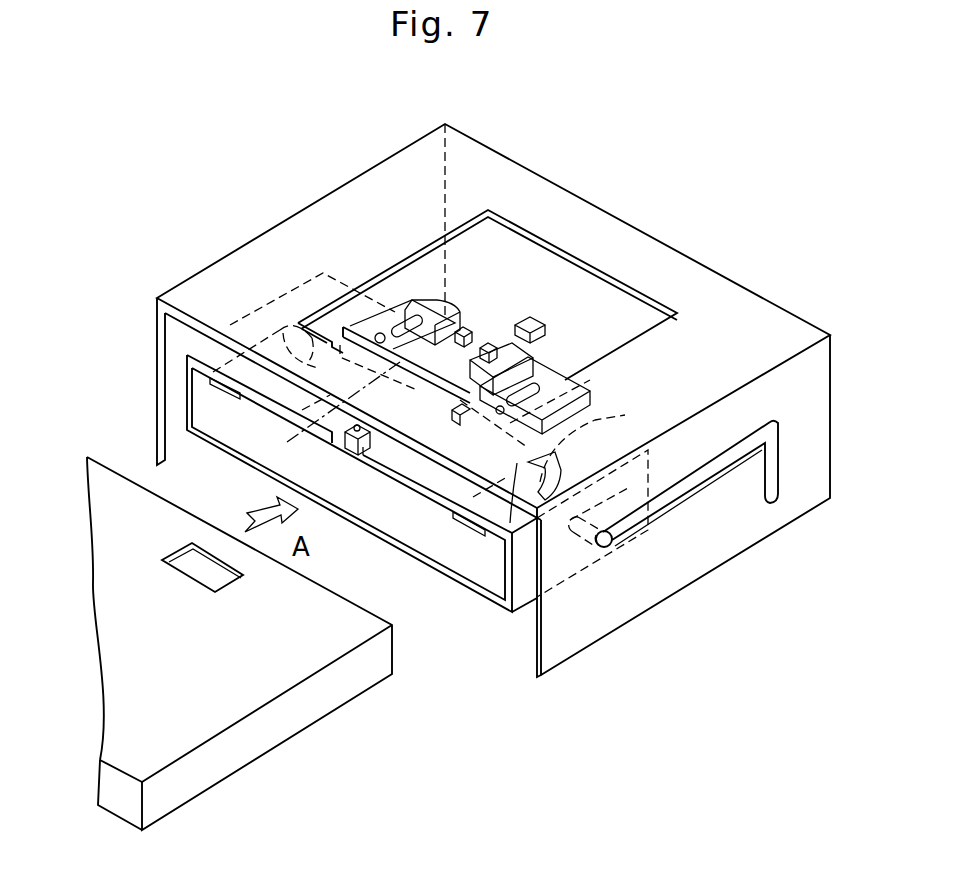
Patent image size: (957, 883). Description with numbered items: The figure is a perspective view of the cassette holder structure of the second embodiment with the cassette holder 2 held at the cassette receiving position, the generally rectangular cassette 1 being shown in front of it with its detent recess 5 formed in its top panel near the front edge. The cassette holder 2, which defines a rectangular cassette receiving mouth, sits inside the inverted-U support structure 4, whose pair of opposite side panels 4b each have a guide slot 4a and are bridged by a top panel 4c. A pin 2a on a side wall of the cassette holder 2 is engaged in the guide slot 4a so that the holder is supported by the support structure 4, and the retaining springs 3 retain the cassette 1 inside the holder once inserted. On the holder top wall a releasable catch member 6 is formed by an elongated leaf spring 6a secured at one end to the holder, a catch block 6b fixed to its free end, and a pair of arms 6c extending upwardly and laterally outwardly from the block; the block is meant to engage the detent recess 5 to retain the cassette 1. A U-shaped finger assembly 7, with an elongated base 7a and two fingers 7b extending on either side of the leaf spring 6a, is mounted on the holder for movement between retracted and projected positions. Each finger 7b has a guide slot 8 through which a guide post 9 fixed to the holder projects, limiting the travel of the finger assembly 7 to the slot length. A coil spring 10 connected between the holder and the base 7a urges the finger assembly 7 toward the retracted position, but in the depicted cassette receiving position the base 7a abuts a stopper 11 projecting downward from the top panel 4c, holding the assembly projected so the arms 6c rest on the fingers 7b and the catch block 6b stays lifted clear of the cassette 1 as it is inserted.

The cassette 1 is at (270, 735).
The cassette holder 2 is at (487, 575).
The pin 2a is at (607, 553).
The retaining spring 3 is at (296, 323).
The support structure 4 is at (702, 296).
The guide slot 4a is at (722, 462).
The side panel 4b is at (817, 435).
The top panel 4c is at (750, 312).
The detent recess 5 is at (218, 585).
The releasable catch member 6 is at (500, 355).
The leaf spring 6a is at (478, 345).
The catch block 6b is at (527, 350).
The arm 6c is at (462, 330).
The finger assembly 7 is at (600, 362).
The base 7a is at (323, 449).
The finger 7b is at (427, 310).
The guide slot 8 is at (412, 318).
The guide post 9 is at (385, 335).
The coil spring 10 is at (385, 480).
The stopper 11 is at (455, 418).